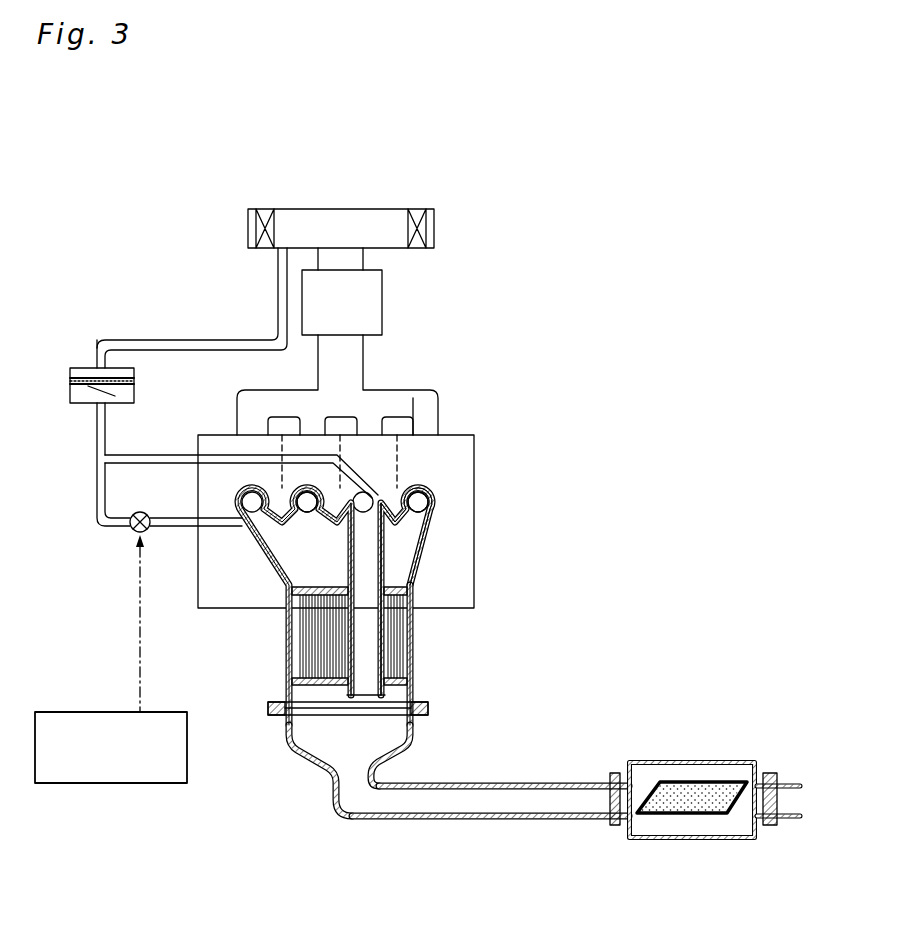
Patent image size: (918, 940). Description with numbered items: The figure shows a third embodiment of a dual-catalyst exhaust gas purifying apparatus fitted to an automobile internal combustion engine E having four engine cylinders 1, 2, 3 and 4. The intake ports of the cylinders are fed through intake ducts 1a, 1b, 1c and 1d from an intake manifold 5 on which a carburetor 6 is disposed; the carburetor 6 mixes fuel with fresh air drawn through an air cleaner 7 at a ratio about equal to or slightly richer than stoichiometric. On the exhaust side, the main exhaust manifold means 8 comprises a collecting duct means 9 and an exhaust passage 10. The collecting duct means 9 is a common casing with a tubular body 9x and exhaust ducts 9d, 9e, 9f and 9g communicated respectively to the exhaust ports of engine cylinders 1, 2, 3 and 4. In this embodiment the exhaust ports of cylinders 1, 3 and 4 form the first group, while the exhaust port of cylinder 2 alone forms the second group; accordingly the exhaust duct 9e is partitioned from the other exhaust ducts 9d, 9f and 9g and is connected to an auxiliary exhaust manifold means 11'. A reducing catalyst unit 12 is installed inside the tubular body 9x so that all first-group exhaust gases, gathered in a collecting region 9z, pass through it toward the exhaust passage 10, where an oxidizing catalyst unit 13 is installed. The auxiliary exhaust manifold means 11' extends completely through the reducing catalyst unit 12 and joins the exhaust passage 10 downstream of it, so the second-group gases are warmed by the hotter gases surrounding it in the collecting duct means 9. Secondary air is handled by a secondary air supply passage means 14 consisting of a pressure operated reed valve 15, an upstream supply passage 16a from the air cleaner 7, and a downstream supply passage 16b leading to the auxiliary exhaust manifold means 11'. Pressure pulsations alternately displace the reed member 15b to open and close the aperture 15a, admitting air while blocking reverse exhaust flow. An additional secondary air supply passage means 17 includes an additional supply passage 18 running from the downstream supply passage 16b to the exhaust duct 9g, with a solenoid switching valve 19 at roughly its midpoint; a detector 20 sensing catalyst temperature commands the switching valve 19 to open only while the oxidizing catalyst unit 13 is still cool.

The engine cylinder 1 is at (444, 491).
The engine cylinder 2 is at (371, 491).
The engine cylinder 3 is at (313, 491).
The engine cylinder 4 is at (231, 603).
The intake duct 1a is at (423, 423).
The intake duct 1b is at (370, 432).
The intake duct 1c is at (308, 428).
The intake duct 1d is at (254, 427).
The intake manifold 5 is at (353, 355).
The carburetor 6 is at (383, 285).
The air cleaner 7 is at (308, 208).
The main exhaust manifold means 8 is at (416, 834).
The collecting duct means 9 is at (432, 623).
The exhaust duct 9d is at (430, 505).
The exhaust duct 9e is at (400, 470).
The exhaust duct 9f is at (300, 485).
The exhaust duct 9g is at (243, 493).
The tubular body 9x is at (412, 668).
The collecting region 9z is at (395, 560).
The exhaust passage 10 is at (540, 783).
The auxiliary exhaust manifold means 11' is at (448, 599).
The reducing catalyst unit 12 is at (315, 652).
The oxidizing catalyst unit 13 is at (700, 760).
The secondary air supply passage means 14 is at (143, 358).
The pressure operated valve 15 is at (76, 350).
The aperture 15a is at (105, 378).
The reed member 15b is at (93, 388).
The upstream supply passage 16a is at (192, 340).
The downstream supply passage 16b is at (152, 455).
The additional secondary air supply passage means 17 is at (94, 540).
The additional supply passage 18 is at (165, 527).
The switching valve 19 is at (130, 530).
The detector 20 is at (137, 784).
The internal combustion engine E is at (495, 584).